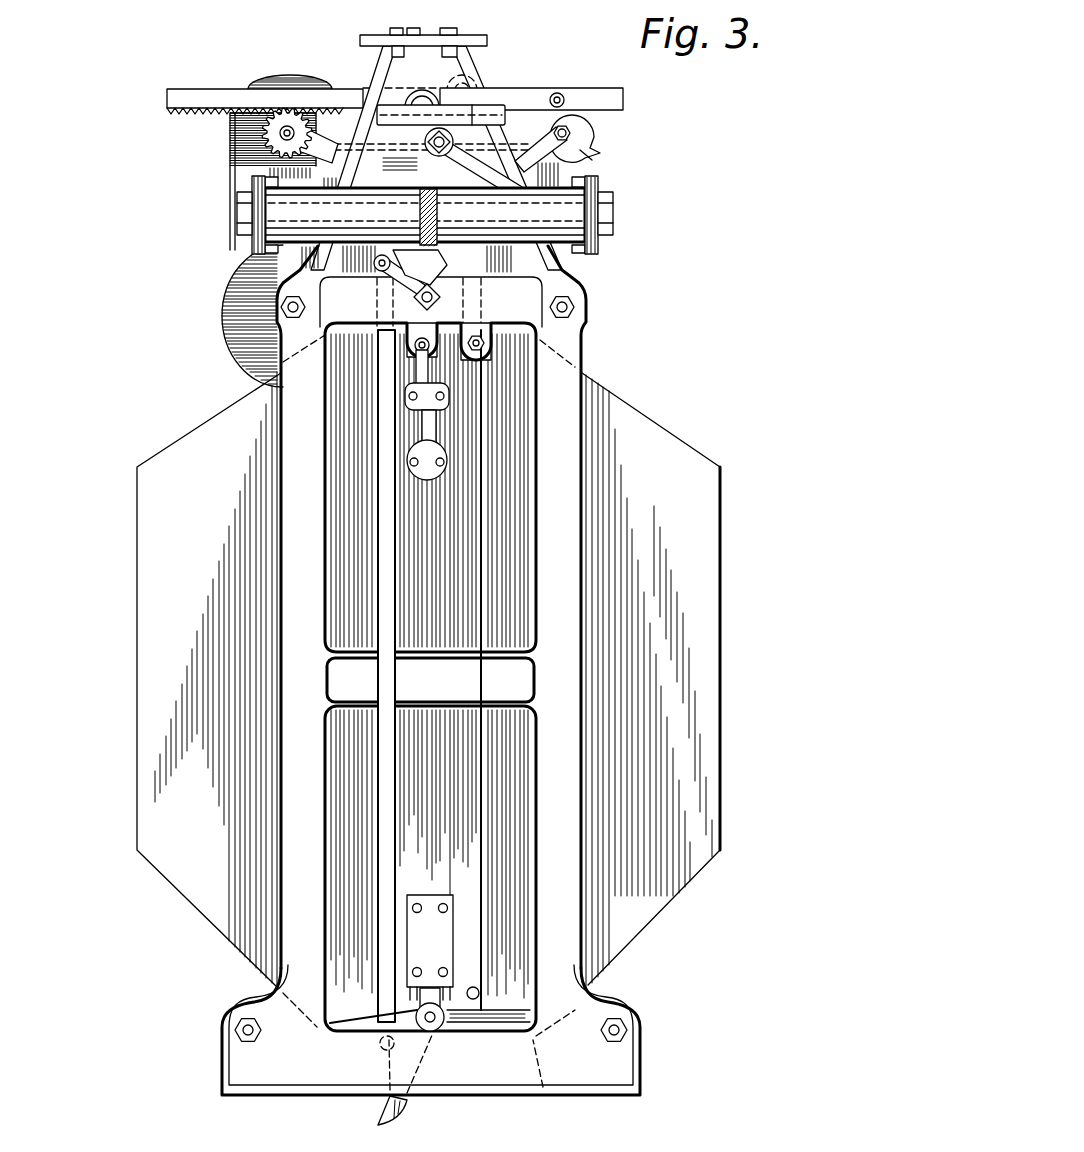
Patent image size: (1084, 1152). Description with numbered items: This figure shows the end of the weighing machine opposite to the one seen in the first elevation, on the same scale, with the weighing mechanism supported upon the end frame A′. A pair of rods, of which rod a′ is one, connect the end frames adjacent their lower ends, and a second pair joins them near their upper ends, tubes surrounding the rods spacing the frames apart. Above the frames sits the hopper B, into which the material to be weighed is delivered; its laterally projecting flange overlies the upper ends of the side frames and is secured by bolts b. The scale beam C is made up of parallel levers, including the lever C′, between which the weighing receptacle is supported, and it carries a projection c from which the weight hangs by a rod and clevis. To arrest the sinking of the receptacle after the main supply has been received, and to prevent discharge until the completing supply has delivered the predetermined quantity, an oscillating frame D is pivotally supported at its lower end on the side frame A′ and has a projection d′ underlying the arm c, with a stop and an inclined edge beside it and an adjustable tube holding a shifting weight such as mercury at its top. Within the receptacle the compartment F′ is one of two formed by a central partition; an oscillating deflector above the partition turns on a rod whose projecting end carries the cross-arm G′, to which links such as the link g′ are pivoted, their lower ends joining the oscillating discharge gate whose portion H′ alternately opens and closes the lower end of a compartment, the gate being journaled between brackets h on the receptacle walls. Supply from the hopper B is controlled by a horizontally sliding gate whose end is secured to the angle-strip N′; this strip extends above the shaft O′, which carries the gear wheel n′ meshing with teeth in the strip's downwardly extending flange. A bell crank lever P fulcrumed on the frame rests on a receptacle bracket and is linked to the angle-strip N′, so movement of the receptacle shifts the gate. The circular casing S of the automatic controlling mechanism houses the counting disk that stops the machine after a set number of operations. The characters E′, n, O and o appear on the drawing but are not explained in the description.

The end frame A′ is at (563, 384).
The hopper B is at (480, 42).
The bolts b is at (399, 33).
The scale beam C is at (277, 210).
The lever C′ is at (600, 193).
The projection c is at (407, 207).
The oscillating frame D is at (427, 300).
The projection d′ is at (418, 208).
The lever E′ is at (517, 88).
The compartment F′ is at (150, 768).
The cross-arm G′ is at (342, 304).
The link g′ is at (385, 627).
The discharge gate portion H′ is at (390, 1120).
The brackets h is at (427, 896).
The angle-strip N′ is at (193, 88).
The gear wheel n′ is at (291, 118).
The pawl tooth n is at (582, 152).
The housing block O is at (230, 127).
The shaft O′ is at (240, 165).
The pin o is at (262, 242).
The bell crank lever P is at (417, 328).
The casing S is at (217, 305).
The rod a′ is at (243, 1030).